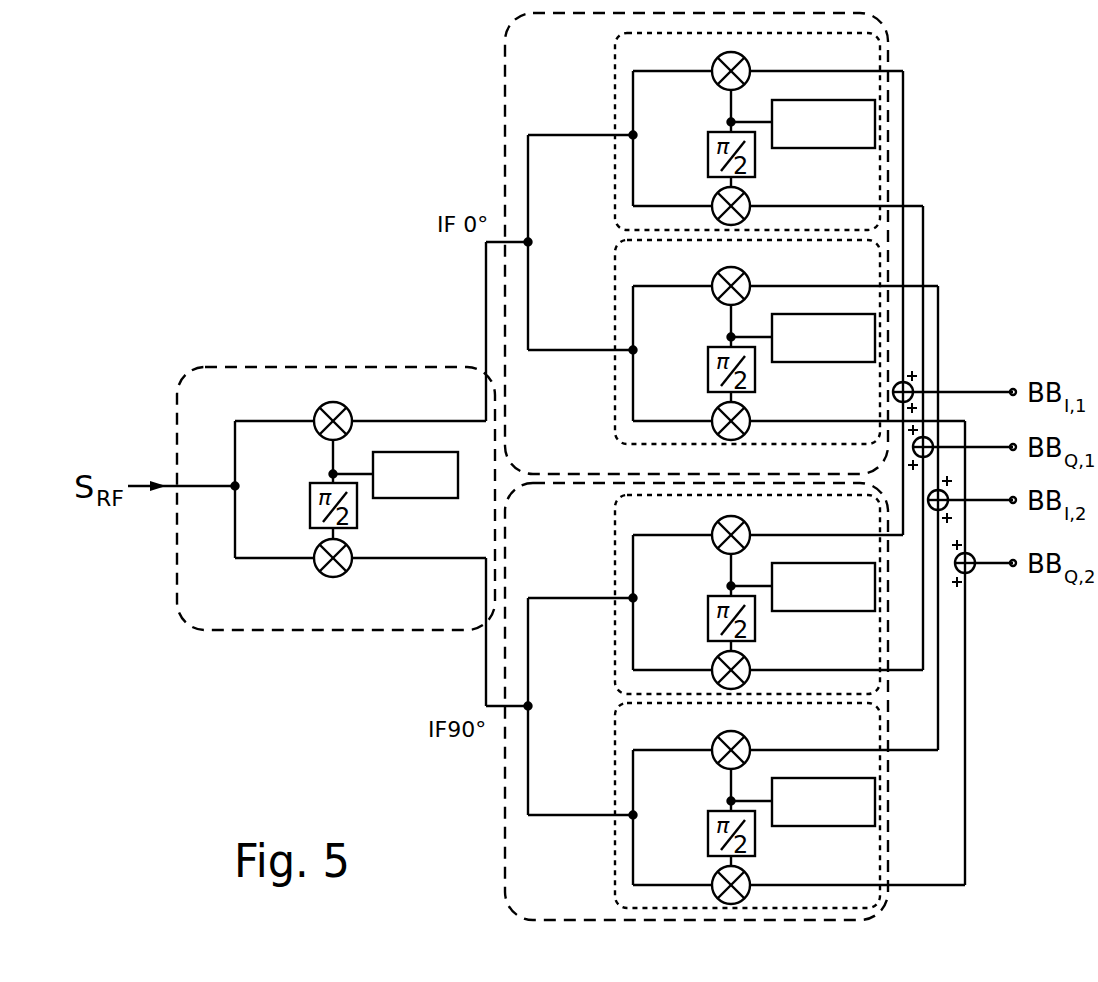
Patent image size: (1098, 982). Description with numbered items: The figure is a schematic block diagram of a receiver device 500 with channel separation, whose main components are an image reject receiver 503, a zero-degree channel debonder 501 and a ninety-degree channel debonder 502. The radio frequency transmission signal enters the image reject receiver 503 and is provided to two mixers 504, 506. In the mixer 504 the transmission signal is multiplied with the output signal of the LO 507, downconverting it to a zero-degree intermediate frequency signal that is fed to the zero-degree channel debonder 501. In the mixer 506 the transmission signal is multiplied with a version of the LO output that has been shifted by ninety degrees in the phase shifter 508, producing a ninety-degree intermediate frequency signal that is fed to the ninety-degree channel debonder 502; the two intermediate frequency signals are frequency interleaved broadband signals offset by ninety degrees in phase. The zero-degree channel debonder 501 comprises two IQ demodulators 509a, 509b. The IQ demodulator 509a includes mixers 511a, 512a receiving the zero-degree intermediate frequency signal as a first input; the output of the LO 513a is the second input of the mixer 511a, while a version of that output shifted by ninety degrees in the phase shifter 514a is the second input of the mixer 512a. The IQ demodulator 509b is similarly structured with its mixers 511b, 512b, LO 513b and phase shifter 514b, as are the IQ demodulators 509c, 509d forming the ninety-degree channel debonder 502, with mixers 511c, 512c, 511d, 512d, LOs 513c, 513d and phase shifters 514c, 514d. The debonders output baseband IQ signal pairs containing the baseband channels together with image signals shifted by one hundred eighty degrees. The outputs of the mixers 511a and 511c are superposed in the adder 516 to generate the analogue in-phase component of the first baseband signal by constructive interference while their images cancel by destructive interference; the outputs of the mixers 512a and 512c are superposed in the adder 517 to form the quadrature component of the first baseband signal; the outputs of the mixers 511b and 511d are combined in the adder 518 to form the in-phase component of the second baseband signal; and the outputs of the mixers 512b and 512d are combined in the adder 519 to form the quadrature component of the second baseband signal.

The receiver device 500 is at (255, 92).
The 0°-channel-debonder 501 is at (890, 48).
The 90°-channel-debonder 502 is at (890, 898).
The image reject receiver 503 is at (195, 362).
The mixer 504 is at (349, 408).
The mixer 506 is at (349, 571).
The LO 507 is at (405, 499).
The phase shifter 508 is at (310, 503).
The IQ demodulator 509a is at (615, 67).
The IQ demodulator 509b is at (615, 262).
The IQ demodulator 509c is at (615, 545).
The IQ demodulator 509d is at (615, 785).
The mixer 511a is at (750, 60).
The mixer 511b is at (750, 275).
The mixer 511c is at (750, 525).
The mixer 511d is at (750, 740).
The mixer 512a is at (750, 195).
The mixer 512b is at (750, 410).
The mixer 512c is at (750, 659).
The mixer 512d is at (750, 874).
The LO 513a is at (862, 100).
The LO 513b is at (868, 313).
The LO 513c is at (868, 611).
The LO 513d is at (868, 778).
The phase shifter 514a is at (708, 135).
The phase shifter 514b is at (708, 350).
The phase shifter 514c is at (708, 600).
The phase shifter 514d is at (708, 815).
The adder 516 is at (910, 385).
The adder 517 is at (930, 440).
The adder 518 is at (945, 508).
The adder 519 is at (972, 570).